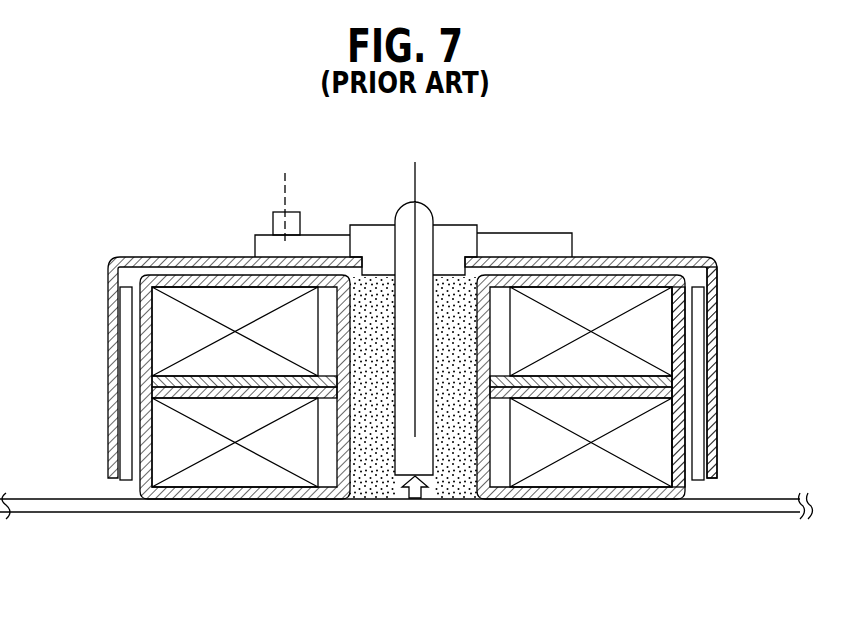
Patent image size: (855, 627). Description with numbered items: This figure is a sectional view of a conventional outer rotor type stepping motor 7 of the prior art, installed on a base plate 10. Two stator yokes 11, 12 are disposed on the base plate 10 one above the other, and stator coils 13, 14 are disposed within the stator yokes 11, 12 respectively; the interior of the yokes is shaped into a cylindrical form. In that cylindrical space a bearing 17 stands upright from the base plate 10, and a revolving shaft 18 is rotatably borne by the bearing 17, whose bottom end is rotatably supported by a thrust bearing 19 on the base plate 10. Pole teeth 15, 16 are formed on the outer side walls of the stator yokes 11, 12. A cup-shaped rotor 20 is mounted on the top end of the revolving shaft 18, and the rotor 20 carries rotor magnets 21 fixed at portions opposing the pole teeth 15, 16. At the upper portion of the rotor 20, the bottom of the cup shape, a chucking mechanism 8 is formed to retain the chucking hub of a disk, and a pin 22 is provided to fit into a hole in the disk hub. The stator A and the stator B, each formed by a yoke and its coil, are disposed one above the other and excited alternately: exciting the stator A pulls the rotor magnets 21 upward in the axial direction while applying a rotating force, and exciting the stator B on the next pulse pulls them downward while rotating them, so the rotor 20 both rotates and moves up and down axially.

The outer rotor type stepping motor 7 is at (682, 204).
The chucking mechanism 8 is at (367, 248).
The base plate 10 is at (790, 514).
The stator yoke 11 is at (735, 392).
The stator yoke 12 is at (735, 327).
The stator coil 13 is at (578, 474).
The stator coil 14 is at (581, 388).
The pole teeth 15 is at (668, 465).
The pole teeth 16 is at (698, 287).
The bearing 17 is at (368, 480).
The revolving shaft 18 is at (424, 222).
The thrust bearing 19 is at (416, 500).
The rotor 20 is at (183, 346).
The rotor magnets 21 is at (125, 292).
The pin 22 is at (270, 206).
The stator A is at (170, 348).
The stator B is at (170, 457).